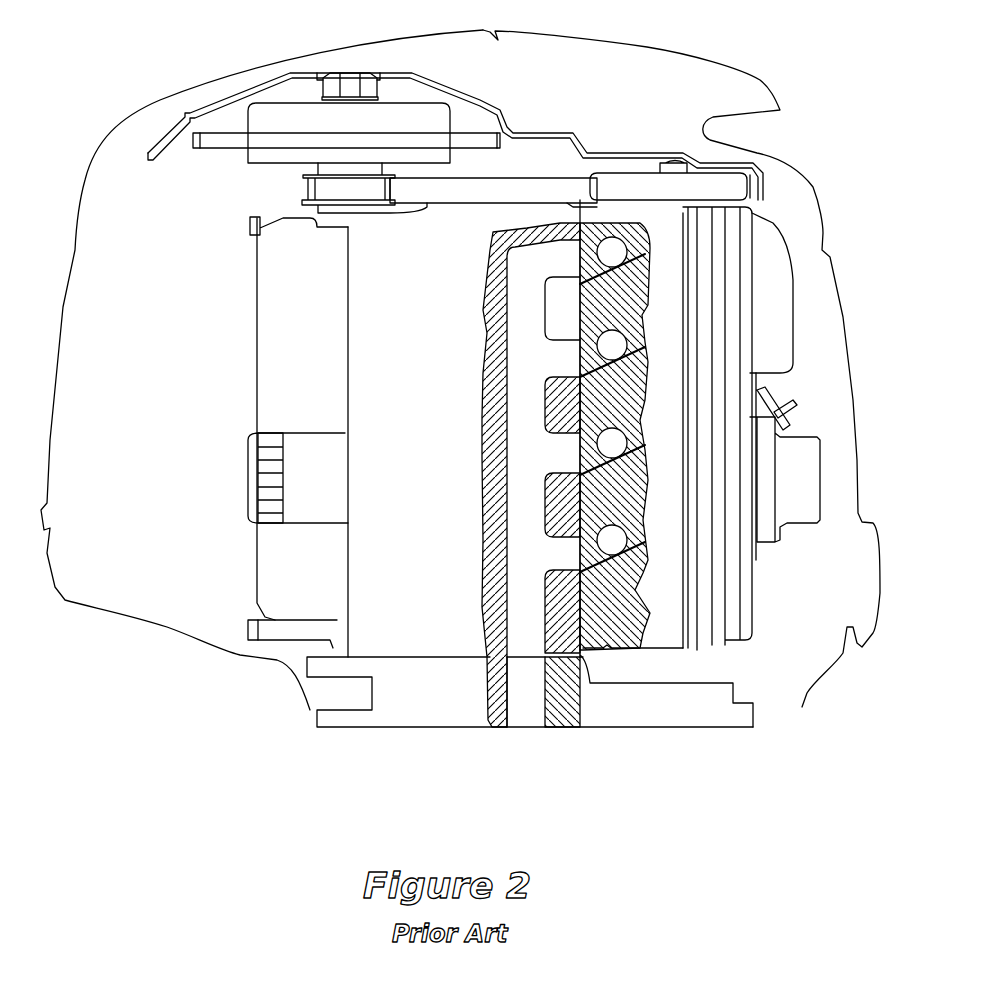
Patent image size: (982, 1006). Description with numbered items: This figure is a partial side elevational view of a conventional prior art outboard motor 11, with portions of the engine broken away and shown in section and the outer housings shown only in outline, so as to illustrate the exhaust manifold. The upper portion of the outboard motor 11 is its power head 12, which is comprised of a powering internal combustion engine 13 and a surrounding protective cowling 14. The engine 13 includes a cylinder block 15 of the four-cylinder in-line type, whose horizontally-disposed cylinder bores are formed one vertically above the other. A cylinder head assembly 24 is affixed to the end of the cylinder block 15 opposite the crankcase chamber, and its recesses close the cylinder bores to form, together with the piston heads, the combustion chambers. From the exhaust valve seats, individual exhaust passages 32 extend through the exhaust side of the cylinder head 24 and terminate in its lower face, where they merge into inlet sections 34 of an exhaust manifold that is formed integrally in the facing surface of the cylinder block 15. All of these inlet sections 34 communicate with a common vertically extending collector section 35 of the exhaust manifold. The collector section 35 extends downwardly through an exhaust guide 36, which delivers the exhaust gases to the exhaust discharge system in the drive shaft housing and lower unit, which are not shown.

The outboard motor 11 is at (160, 50).
The power head 12 is at (792, 82).
The internal combustion engine 13 is at (216, 267).
The protective cowling 14 is at (858, 460).
The cylinder block 15 is at (417, 660).
The cylinder head assembly 24 is at (660, 650).
The exhaust passages 32 is at (600, 268).
The inlet sections 34 is at (550, 262).
The collector section 35 is at (522, 625).
The exhaust guide 36 is at (507, 697).